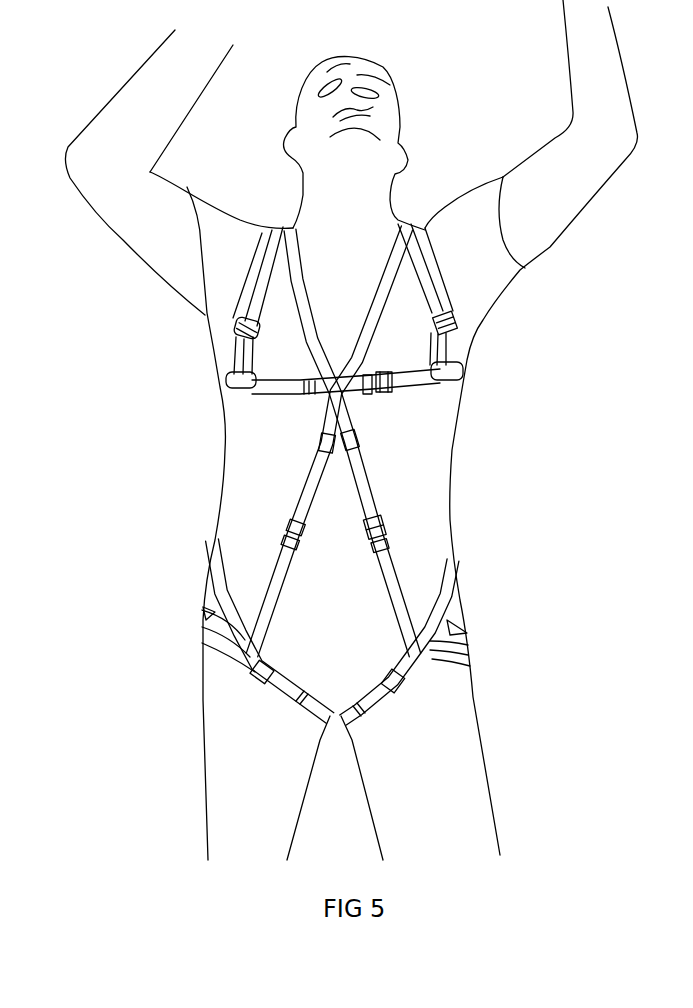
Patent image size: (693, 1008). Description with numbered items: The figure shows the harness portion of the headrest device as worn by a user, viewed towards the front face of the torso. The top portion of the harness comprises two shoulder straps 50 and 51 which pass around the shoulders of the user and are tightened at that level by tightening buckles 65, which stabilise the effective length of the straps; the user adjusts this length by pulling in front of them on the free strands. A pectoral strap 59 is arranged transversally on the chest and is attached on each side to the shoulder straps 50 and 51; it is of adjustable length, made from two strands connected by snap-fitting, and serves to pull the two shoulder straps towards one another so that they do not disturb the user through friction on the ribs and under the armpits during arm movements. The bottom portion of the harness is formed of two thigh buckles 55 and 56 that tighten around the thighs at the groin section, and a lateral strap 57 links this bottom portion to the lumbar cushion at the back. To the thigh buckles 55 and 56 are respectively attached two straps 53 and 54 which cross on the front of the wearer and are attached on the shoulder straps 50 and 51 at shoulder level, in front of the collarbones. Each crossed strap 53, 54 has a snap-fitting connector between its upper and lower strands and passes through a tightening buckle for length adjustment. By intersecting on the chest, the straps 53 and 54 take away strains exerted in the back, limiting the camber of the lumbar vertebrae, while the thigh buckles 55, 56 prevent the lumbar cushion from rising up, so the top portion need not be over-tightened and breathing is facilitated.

The shoulder strap 50 is at (433, 272).
The tightening buckle 65 is at (240, 325).
The shoulder strap 51 is at (232, 372).
The pectoral strap 59 is at (410, 380).
The crossed strap 54 is at (327, 435).
The crossed strap 53 is at (387, 553).
The right lateral strap 57 is at (207, 567).
The thigh buckle 56 is at (217, 632).
The thigh buckle 55 is at (467, 647).